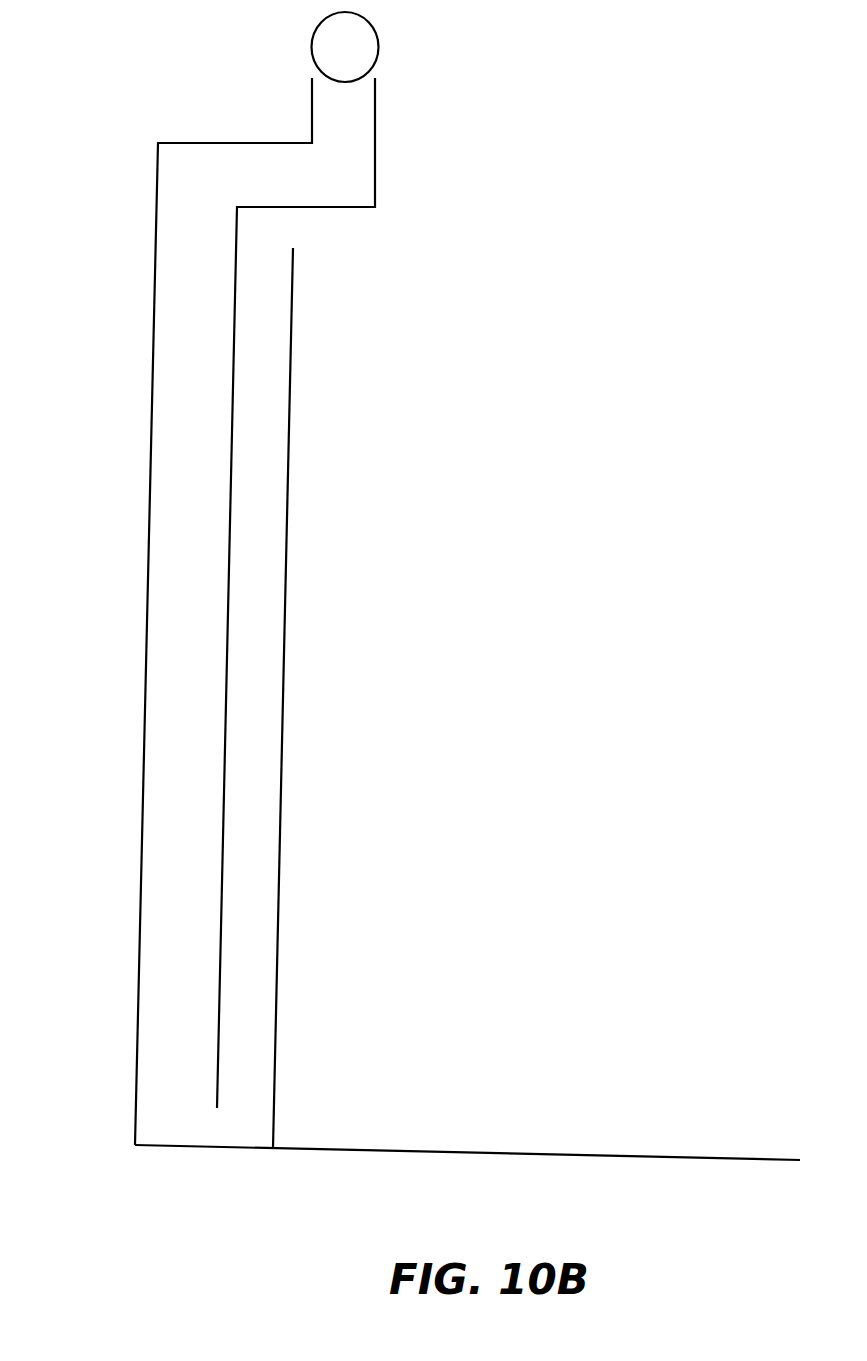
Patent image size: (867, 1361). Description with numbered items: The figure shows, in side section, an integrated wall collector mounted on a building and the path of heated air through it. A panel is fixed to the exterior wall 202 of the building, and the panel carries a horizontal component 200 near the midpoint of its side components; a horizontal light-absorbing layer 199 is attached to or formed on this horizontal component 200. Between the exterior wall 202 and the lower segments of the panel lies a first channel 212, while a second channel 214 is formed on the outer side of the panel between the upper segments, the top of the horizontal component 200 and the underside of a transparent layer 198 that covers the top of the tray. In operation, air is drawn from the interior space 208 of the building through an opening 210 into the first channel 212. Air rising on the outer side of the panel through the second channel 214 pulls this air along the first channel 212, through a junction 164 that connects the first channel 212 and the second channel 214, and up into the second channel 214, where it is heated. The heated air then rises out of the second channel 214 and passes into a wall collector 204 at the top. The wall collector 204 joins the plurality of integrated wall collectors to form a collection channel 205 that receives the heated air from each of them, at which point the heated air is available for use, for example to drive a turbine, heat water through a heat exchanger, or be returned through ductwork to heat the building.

The junction 164 is at (215, 1120).
The transparent layer 198 is at (140, 874).
The horizontal light-absorbing layer 199 is at (206, 770).
The horizontal component 200 is at (225, 667).
The exterior wall 202 is at (282, 762).
The wall collector 204 is at (337, 47).
The collection channel 205 is at (357, 47).
The interior space 208 is at (648, 781).
The opening 210 is at (361, 687).
The first channel 212 is at (343, 698).
The second channel 214 is at (177, 611).